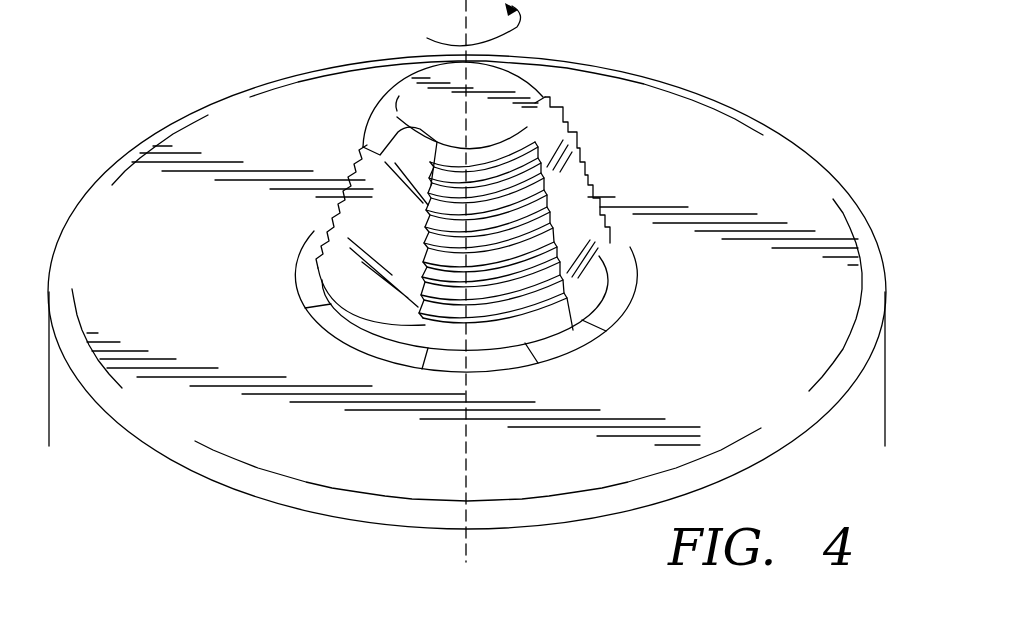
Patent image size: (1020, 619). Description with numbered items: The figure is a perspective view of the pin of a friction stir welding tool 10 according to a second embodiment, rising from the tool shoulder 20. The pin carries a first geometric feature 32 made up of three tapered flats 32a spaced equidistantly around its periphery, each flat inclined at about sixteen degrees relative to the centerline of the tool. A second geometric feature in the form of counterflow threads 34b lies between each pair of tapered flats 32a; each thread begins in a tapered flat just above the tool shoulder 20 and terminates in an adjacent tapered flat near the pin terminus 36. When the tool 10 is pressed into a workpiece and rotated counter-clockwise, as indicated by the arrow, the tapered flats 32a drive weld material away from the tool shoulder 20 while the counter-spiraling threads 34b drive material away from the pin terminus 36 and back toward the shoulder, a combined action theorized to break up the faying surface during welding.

The tool 10 is at (708, 42).
The tool shoulder 20 is at (728, 331).
The first geometric feature 32 is at (587, 217).
The tapered flat 32a is at (402, 241).
The counterflow threads 34b is at (510, 330).
The pin terminus 36 is at (458, 123).